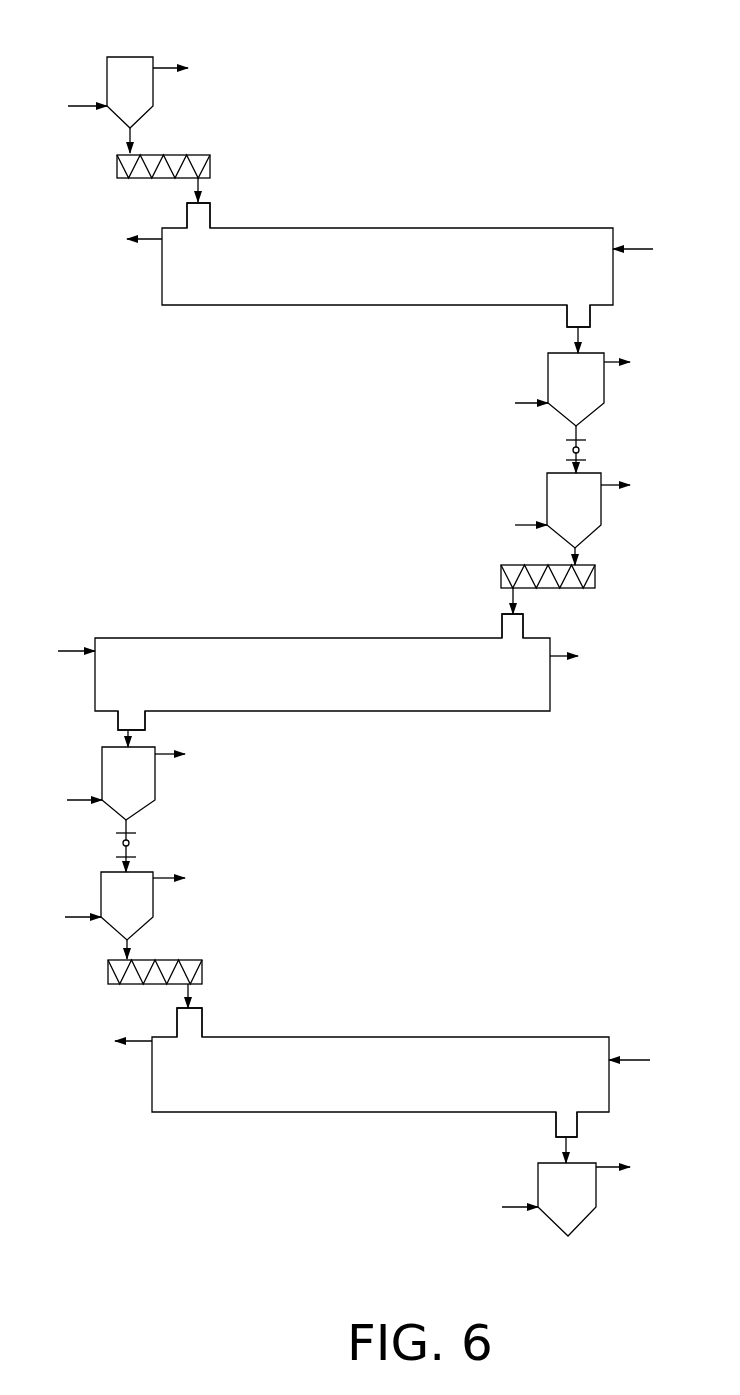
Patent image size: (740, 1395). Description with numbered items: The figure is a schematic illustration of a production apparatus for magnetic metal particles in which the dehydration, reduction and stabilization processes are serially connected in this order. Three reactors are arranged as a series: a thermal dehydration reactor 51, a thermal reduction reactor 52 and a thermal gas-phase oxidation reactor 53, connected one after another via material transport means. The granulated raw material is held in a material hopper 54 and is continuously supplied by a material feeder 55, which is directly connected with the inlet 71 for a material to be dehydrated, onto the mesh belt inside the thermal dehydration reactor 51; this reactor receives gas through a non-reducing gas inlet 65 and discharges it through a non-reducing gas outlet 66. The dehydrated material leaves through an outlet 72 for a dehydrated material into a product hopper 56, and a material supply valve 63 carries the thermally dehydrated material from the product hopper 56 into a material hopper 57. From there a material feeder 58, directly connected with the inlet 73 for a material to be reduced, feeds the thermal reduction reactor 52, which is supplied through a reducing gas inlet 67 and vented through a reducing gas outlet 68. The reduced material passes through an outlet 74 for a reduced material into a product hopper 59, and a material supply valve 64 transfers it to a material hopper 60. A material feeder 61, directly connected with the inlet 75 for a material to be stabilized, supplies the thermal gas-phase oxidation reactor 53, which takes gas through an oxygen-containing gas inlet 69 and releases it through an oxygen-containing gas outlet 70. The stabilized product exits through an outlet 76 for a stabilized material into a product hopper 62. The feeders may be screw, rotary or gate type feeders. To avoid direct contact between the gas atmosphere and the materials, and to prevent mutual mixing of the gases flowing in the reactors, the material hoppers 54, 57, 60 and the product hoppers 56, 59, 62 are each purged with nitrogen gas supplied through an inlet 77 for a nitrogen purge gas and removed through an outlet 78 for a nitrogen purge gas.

The thermal dehydration reactor 51 is at (366, 227).
The thermal reduction reactor 52 is at (288, 636).
The thermal gas-phase oxidation reactor 53 is at (354, 1037).
The material hopper 54 is at (132, 57).
The material feeder 55 is at (208, 155).
The product hopper 56 is at (547, 353).
The material hopper 57 is at (547, 480).
The material feeder 58 is at (500, 567).
The product hopper 59 is at (102, 765).
The material hopper 60 is at (101, 874).
The material feeder 61 is at (213, 952).
The product hopper 62 is at (538, 1165).
The material supply valve 63 is at (582, 450).
The material supply valve 64 is at (136, 843).
The non-reducing gas inlet 65 is at (636, 247).
The non-reducing gas outlet 66 is at (145, 243).
The reducing gas inlet 67 is at (70, 648).
The reducing gas outlet 68 is at (560, 660).
The oxygen-containing gas inlet 69 is at (632, 1058).
The oxygen-containing gas outlet 70 is at (140, 1047).
The inlet for a material to be dehydrated 71 is at (203, 217).
The outlet for a dehydrated material 72 is at (583, 315).
The inlet for a material to be reduced 73 is at (508, 628).
The outlet for a reduced material 74 is at (121, 720).
The inlet for a material to be stabilized 75 is at (192, 1022).
The outlet for a stabilized material 76 is at (567, 1126).
The inlet for a nitrogen purge gas 77 is at (84, 108).
The outlet for a nitrogen purge gas 78 is at (165, 70).